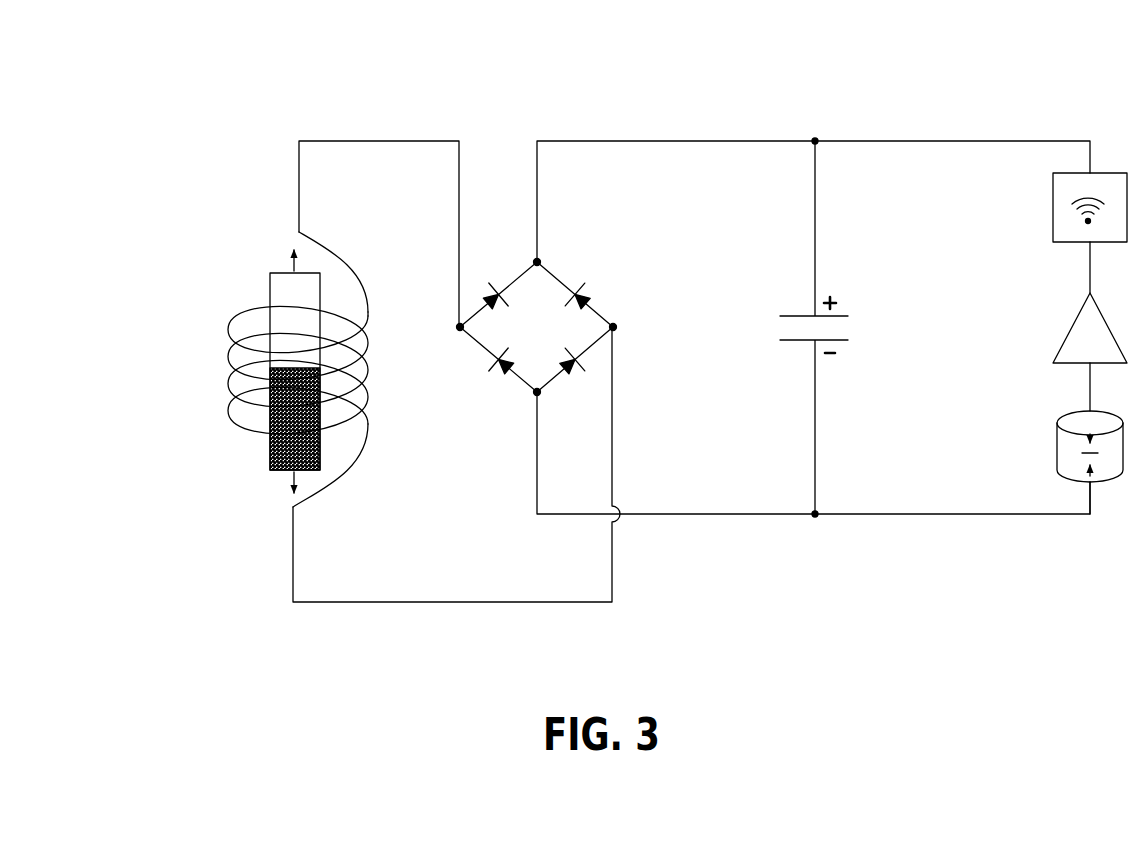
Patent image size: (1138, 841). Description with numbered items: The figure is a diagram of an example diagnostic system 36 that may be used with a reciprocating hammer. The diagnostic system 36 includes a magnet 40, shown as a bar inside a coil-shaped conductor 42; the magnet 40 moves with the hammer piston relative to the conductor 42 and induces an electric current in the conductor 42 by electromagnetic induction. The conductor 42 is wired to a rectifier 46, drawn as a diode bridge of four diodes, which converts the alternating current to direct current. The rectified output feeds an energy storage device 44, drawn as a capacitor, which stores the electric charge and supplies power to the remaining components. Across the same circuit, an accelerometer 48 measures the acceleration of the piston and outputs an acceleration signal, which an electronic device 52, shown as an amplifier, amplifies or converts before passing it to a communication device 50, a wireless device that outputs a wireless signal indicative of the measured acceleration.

The diagnostic system 36 is at (122, 57).
The magnet 40 is at (275, 266).
The conductor 42 is at (229, 335).
The energy storage device 44 is at (795, 311).
The rectifier 46 is at (608, 307).
The accelerometer 48 is at (1050, 445).
The communication device 50 is at (1048, 210).
The electronic device 52 is at (1068, 323).